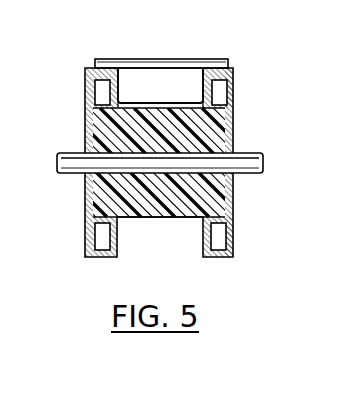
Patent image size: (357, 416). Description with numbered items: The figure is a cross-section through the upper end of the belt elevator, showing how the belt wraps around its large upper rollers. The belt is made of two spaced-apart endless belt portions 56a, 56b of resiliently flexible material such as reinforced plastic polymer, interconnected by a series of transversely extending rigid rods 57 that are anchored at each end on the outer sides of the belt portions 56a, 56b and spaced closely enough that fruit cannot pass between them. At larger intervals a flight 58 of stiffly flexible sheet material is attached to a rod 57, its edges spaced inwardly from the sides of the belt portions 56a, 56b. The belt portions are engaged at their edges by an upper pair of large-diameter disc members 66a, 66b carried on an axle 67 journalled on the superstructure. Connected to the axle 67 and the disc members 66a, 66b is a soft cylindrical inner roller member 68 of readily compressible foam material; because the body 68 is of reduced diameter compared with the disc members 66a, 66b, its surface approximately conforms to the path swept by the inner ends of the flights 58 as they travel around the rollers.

The endless belt portion 56a is at (104, 64).
The endless belt portion 56b is at (236, 38).
The rigid rod 57 is at (153, 60).
The flight 58 is at (171, 85).
The axle 67 is at (68, 160).
The soft cylindrical inner roller member 68 is at (114, 185).
The disc member 66a is at (100, 257).
The disc member 66b is at (220, 257).